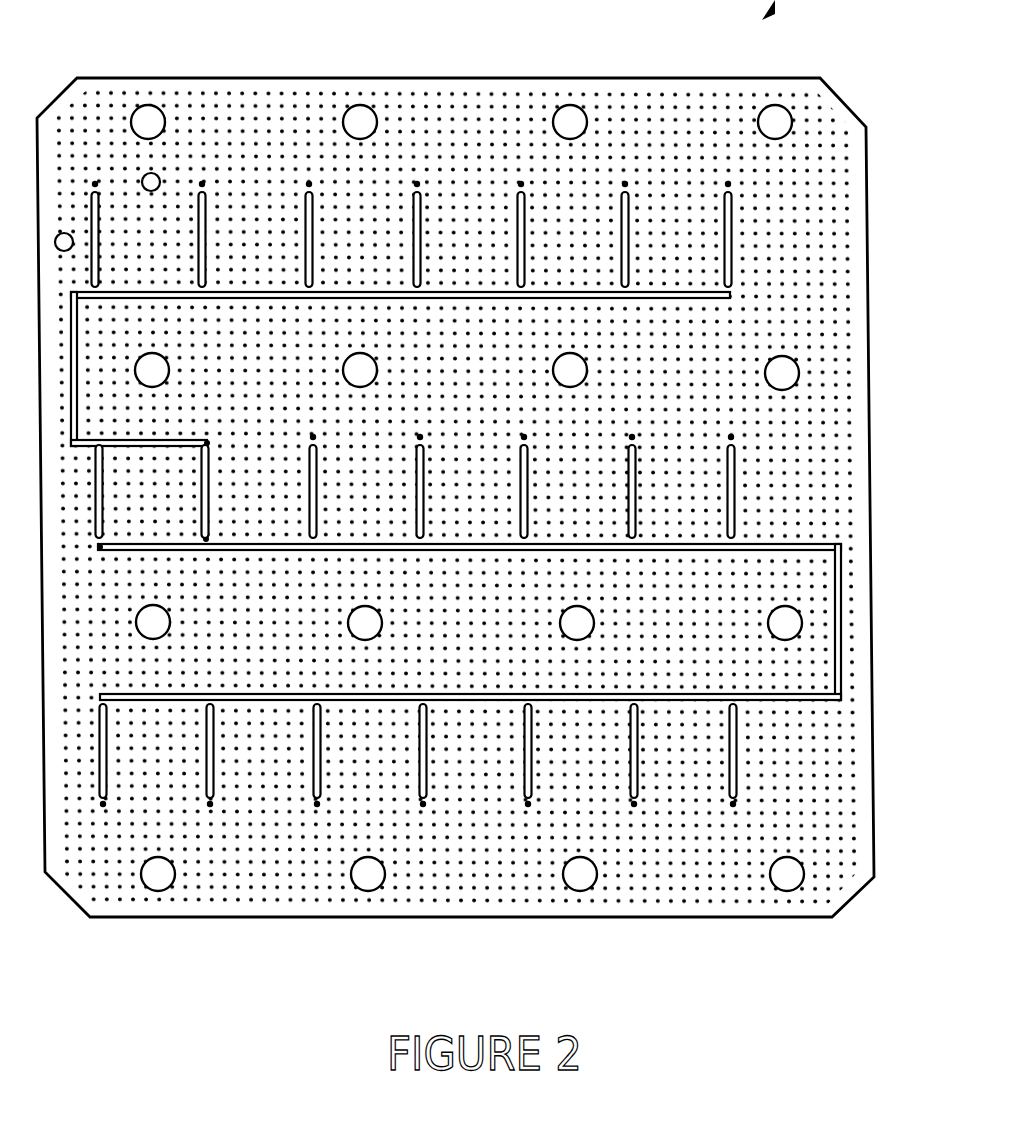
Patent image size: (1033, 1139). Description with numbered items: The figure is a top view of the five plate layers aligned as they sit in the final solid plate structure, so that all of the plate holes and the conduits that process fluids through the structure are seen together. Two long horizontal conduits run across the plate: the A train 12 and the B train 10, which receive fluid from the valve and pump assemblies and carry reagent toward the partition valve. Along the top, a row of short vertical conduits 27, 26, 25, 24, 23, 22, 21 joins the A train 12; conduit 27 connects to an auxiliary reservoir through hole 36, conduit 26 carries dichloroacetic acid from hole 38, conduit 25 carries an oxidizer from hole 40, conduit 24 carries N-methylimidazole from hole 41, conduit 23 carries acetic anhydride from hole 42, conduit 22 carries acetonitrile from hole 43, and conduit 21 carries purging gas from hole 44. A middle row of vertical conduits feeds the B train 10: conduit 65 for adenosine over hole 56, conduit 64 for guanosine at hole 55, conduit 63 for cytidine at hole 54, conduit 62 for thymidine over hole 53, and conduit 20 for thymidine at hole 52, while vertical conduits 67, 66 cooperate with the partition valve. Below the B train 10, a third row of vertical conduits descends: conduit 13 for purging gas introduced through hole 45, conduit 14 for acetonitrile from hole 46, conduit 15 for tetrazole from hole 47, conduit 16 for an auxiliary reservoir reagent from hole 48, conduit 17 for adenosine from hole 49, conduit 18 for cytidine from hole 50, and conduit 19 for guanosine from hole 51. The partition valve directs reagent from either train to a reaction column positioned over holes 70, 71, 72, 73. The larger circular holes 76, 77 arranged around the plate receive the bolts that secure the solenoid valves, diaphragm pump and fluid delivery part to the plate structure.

The B train 10 is at (842, 608).
The A train 12 is at (598, 300).
The conduit 13 is at (107, 753).
The conduit 14 is at (214, 755).
The conduit 15 is at (321, 755).
The conduit 16 is at (427, 755).
The conduit 17 is at (532, 755).
The conduit 18 is at (638, 757).
The conduit 19 is at (737, 772).
The conduit 20 is at (735, 501).
The conduit 21 is at (732, 240).
The conduit 22 is at (629, 240).
The conduit 23 is at (525, 240).
The conduit 24 is at (421, 240).
The conduit 25 is at (313, 240).
The conduit 26 is at (206, 240).
The conduit 27 is at (99, 240).
The hole 36 is at (95, 183).
The hole 38 is at (202, 183).
The hole 40 is at (309, 183).
The hole 41 is at (417, 183).
The hole 42 is at (521, 183).
The hole 43 is at (625, 183).
The hole 44 is at (728, 183).
The hole 45 is at (104, 804).
The hole 46 is at (211, 805).
The hole 47 is at (318, 805).
The hole 48 is at (424, 805).
The hole 49 is at (529, 805).
The hole 50 is at (635, 805).
The hole 51 is at (734, 805).
The hole 52 is at (731, 436).
The hole 53 is at (632, 436).
The hole 54 is at (524, 436).
The hole 55 is at (420, 436).
The hole 56 is at (313, 436).
The conduit 62 is at (636, 501).
The conduit 63 is at (528, 500).
The conduit 64 is at (424, 500).
The conduit 65 is at (317, 498).
The vertical conduit 66 is at (209, 498).
The vertical conduit 67 is at (103, 497).
The hole 70 is at (208, 443).
The hole 71 is at (128, 445).
The hole 72 is at (207, 537).
The hole 73 is at (100, 545).
The hole 76 is at (149, 115).
The hole 77 is at (160, 376).